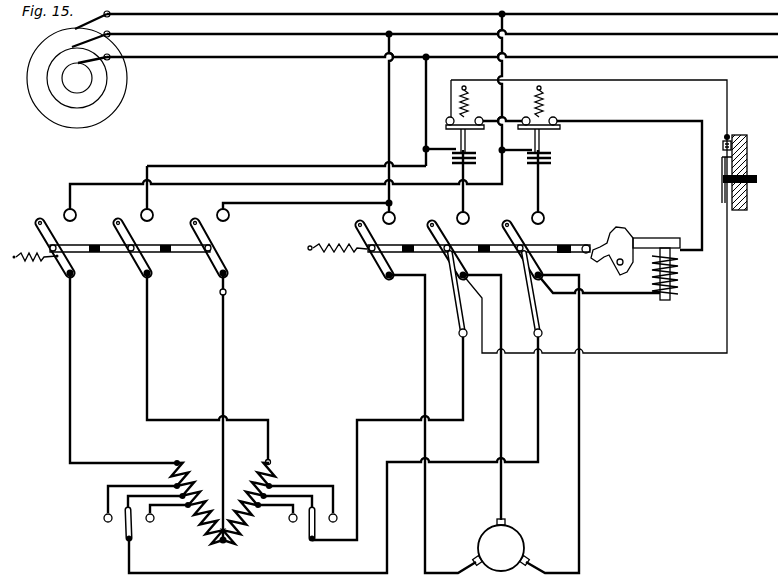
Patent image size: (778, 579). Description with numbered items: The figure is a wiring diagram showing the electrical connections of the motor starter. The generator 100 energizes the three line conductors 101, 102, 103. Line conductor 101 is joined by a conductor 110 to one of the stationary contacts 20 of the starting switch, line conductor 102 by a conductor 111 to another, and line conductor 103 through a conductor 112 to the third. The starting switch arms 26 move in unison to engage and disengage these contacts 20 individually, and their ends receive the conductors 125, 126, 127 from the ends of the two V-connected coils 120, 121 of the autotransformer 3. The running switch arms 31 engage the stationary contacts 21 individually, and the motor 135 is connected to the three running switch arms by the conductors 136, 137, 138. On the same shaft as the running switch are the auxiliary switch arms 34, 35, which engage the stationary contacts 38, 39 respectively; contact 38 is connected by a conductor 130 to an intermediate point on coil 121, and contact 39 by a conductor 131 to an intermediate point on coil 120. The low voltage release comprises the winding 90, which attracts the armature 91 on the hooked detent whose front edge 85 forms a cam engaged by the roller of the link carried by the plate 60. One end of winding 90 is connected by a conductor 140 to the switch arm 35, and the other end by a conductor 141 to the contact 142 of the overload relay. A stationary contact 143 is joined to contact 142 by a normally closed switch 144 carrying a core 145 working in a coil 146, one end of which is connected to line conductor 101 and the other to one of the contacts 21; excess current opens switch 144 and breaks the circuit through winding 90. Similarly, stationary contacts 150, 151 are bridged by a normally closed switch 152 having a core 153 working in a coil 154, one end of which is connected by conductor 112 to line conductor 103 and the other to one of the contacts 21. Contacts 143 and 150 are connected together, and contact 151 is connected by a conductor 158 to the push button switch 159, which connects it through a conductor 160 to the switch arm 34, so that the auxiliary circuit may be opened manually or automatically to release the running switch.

The autotransformer 3 is at (220, 478).
The stationary contacts 20 is at (76, 212).
The stationary contacts 21 is at (394, 215).
The starting switch arms 26 is at (50, 214).
The running switch arms 31 is at (365, 229).
The auxiliary switch arm 34 is at (456, 312).
The auxiliary switch arm 35 is at (534, 320).
The stationary contact 38 is at (460, 340).
The stationary contact 39 is at (538, 335).
The plate 60 is at (619, 235).
The front edge of hook 85 is at (577, 238).
The winding 90 is at (680, 273).
The armature 91 is at (666, 248).
The generator 100 is at (125, 88).
The line conductor 101 is at (276, 14).
The line conductor 102 is at (276, 34).
The line conductor 103 is at (276, 56).
The conductor 110 is at (112, 177).
The conductor 111 is at (229, 160).
The conductor 112 is at (426, 112).
The coil 120 is at (199, 491).
The coil 121 is at (249, 491).
The conductor 125 is at (69, 365).
The conductor 126 is at (146, 370).
The conductor 127 is at (223, 365).
The conductor 130 is at (388, 420).
The conductor 131 is at (525, 417).
The motor 135 is at (513, 544).
The conductor 136 is at (425, 498).
The conductor 137 is at (501, 495).
The conductor 138 is at (580, 506).
The conductor 140 is at (636, 294).
The conductor 141 is at (653, 121).
The contact 142 is at (556, 118).
The stationary contact 143 is at (525, 117).
The normally closed switch 144 is at (558, 128).
The core 145 is at (519, 141).
The coil 146 is at (552, 157).
The stationary contact 150 is at (467, 101).
The stationary contact 151 is at (449, 117).
The normally closed switch 152 is at (470, 129).
The core 153 is at (460, 140).
The coil 154 is at (475, 157).
The conductor 158 is at (593, 80).
The push button switch 159 is at (722, 198).
The conductor 160 is at (653, 349).